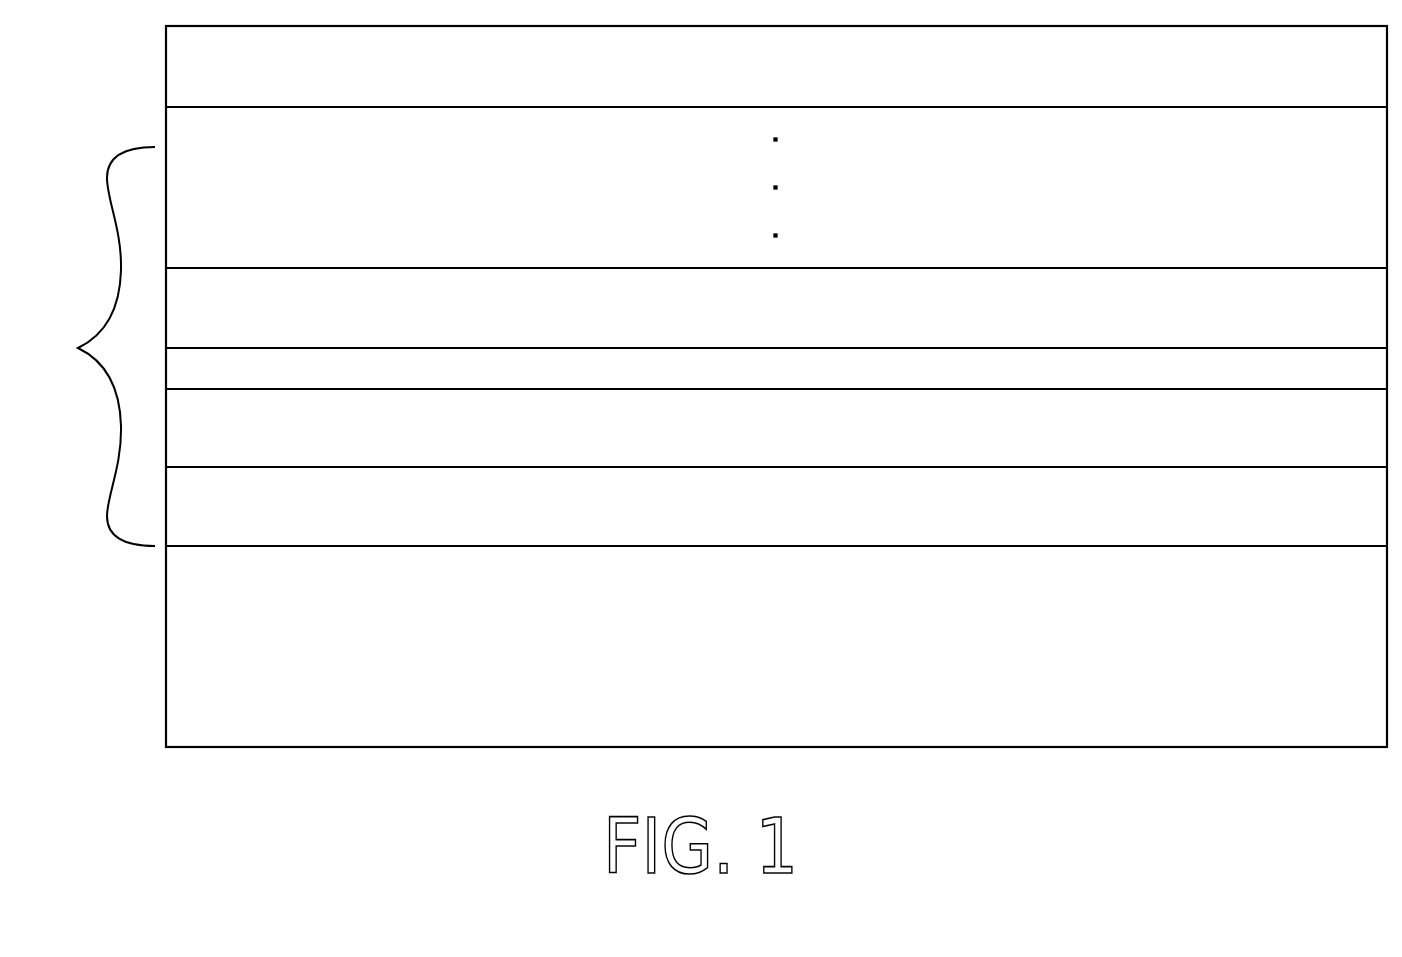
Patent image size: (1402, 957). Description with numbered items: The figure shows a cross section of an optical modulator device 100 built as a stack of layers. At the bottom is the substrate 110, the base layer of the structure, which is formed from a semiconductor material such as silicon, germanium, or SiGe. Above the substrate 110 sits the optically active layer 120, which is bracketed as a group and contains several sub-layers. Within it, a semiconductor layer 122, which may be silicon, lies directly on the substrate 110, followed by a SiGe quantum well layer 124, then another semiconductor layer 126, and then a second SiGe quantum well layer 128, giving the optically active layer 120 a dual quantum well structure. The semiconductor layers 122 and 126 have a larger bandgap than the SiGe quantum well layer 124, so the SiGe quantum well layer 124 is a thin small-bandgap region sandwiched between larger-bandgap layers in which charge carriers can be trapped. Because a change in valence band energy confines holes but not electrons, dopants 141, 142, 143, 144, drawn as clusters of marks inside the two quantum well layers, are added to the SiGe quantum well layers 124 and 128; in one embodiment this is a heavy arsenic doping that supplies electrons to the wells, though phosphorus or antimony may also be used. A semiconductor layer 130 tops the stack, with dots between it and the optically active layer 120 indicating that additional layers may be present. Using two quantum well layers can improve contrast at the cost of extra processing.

The optical modulator device 100 is at (343, 803).
The substrate 110 is at (855, 668).
The optically active layer 120 is at (707, 346).
The semiconductor layer 122 is at (920, 520).
The SiGe quantum well layer 124 is at (958, 442).
The semiconductor layer 126 is at (918, 385).
The SiGe quantum well layer 128 is at (968, 323).
The semiconductor layer 130 is at (918, 80).
The dopant 141 is at (393, 302).
The dopant 142 is at (1145, 303).
The dopant 143 is at (393, 423).
The dopant 144 is at (1135, 420).